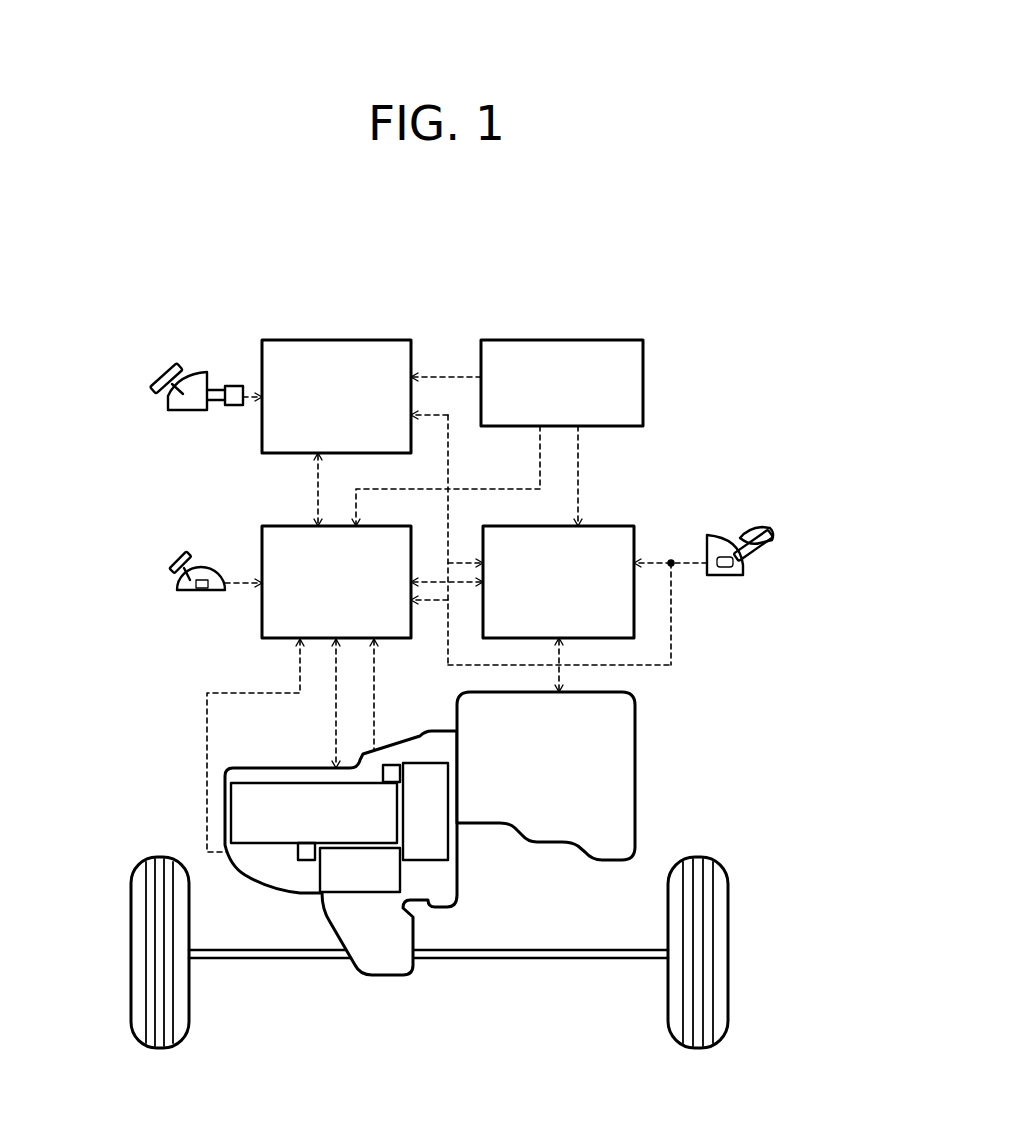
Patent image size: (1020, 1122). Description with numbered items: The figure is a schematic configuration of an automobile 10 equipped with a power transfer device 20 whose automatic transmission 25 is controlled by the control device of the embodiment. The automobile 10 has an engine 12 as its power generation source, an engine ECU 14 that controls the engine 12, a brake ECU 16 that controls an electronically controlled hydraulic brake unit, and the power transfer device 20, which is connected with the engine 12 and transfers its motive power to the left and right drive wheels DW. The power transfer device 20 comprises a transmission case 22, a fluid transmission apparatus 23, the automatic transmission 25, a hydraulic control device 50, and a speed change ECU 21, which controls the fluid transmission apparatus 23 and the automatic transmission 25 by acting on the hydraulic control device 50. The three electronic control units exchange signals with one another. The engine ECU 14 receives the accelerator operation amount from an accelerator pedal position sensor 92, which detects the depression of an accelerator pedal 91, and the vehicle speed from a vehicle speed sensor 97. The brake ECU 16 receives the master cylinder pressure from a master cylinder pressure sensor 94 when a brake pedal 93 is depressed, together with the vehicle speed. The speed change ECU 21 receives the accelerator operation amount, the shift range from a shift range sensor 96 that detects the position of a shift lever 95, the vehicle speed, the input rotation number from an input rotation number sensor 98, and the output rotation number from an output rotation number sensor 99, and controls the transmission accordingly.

The automobile 10 is at (728, 391).
The engine 12 is at (558, 840).
The engine ECU 14 is at (606, 526).
The brake ECU 16 is at (334, 340).
The power transfer device 20 is at (186, 768).
The speed change ECU 21 is at (284, 526).
The transmission case 22 is at (265, 768).
The fluid transmission apparatus 23 is at (440, 862).
The automatic transmission 25 is at (233, 797).
The hydraulic control device 50 is at (350, 893).
The accelerator pedal 91 is at (772, 545).
The accelerator pedal position sensor 92 is at (745, 572).
The brake pedal 93 is at (156, 380).
The master cylinder pressure sensor 94 is at (170, 400).
The shift lever 95 is at (172, 563).
The shift range sensor 96 is at (186, 580).
The vehicle speed sensor 97 is at (556, 340).
The input rotation number sensor 98 is at (393, 765).
The output rotation number sensor 99 is at (294, 872).
The drive wheels DW is at (131, 957).